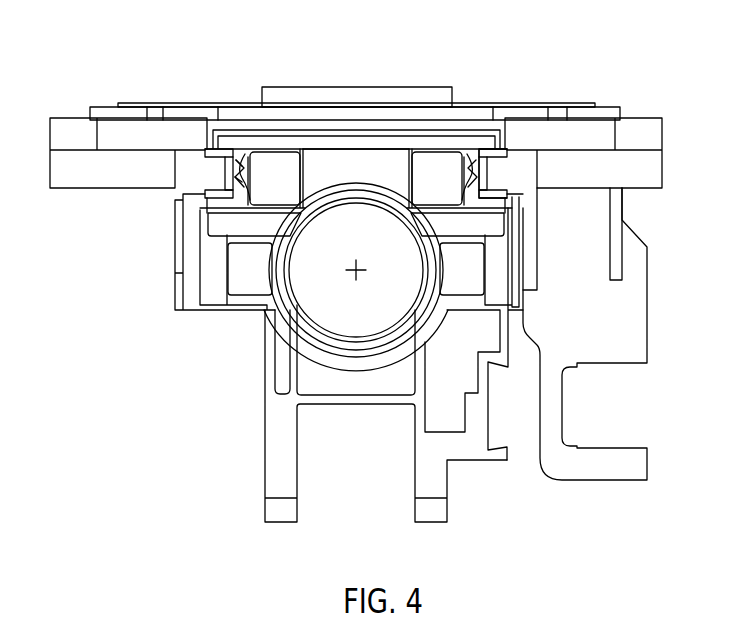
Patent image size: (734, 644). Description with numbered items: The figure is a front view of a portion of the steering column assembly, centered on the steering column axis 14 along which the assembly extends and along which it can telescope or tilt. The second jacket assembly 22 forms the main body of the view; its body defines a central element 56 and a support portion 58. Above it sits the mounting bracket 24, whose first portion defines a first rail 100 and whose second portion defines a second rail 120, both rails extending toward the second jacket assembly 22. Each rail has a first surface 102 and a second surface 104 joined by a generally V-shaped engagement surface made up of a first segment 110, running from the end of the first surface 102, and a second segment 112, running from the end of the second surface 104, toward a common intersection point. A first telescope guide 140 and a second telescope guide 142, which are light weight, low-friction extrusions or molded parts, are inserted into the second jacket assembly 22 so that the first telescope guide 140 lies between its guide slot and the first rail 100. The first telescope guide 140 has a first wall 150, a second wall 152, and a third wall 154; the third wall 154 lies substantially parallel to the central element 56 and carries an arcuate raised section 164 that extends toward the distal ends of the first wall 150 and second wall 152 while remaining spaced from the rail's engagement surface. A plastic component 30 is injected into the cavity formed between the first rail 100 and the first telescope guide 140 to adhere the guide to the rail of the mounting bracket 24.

The steering column axis 14 is at (360, 275).
The second jacket assembly 22 is at (213, 312).
The mounting bracket 24 is at (172, 97).
The plastic component 30 is at (218, 196).
The central element 56 is at (255, 157).
The support portion 58 is at (345, 142).
The first rail 100 is at (510, 176).
The first surface 102 is at (205, 153).
The second surface 104 is at (222, 199).
The first segment 110 is at (202, 175).
The second segment 112 is at (220, 170).
The second rail 120 is at (228, 176).
The first telescope guide 140 is at (415, 200).
The second telescope guide 142 is at (297, 200).
The first wall 150 is at (215, 147).
The second wall 152 is at (243, 200).
The third wall 154 is at (246, 155).
The raised section 164 is at (246, 168).